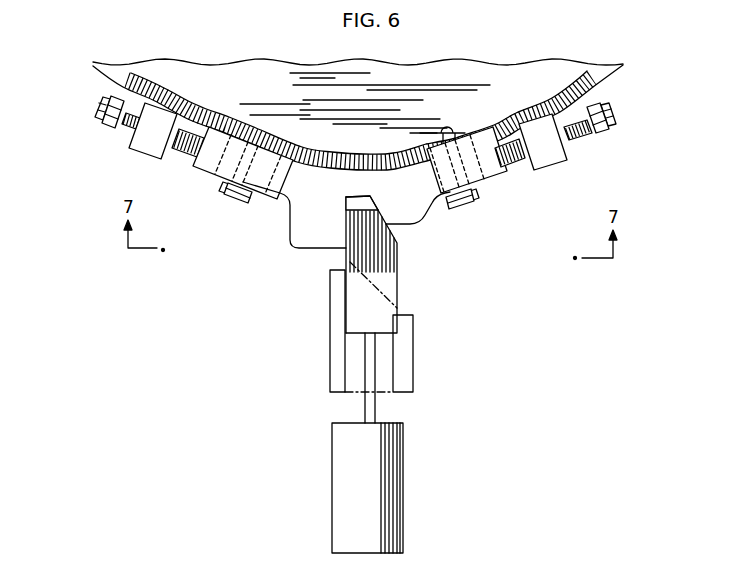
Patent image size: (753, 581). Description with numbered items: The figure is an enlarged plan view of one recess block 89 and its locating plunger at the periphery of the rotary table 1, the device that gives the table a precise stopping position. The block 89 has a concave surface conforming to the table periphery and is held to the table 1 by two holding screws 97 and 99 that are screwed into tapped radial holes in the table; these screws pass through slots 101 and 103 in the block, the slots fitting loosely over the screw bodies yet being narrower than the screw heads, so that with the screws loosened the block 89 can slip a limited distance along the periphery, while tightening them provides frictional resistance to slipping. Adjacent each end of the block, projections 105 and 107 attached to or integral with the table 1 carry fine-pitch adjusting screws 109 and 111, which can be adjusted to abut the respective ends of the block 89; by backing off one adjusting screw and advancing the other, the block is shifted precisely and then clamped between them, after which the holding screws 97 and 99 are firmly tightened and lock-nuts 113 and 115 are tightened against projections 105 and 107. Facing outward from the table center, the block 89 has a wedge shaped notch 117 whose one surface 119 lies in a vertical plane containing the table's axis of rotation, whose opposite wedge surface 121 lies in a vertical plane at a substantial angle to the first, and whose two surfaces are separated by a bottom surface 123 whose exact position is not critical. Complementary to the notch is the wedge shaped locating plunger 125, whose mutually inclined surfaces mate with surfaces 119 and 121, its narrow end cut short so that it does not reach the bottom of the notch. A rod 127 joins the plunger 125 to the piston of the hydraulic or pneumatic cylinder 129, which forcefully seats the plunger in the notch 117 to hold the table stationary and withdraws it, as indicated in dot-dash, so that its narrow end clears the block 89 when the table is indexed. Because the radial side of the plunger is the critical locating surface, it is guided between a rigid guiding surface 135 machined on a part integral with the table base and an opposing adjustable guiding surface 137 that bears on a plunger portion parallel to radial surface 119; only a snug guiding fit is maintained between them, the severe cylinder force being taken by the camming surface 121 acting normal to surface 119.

The table 1 is at (623, 65).
The lock-nut 113 is at (124, 133).
The projection 105 is at (152, 140).
The adjusting screw 109 is at (185, 150).
The slot 101 is at (227, 130).
The screw 97 is at (232, 198).
The recess block 89 is at (287, 214).
The slot 103 is at (463, 132).
The surface 119 is at (345, 222).
The bottom surface 123 is at (362, 198).
The wedge shaped notch 117 is at (352, 197).
The locating plunger 125 is at (398, 265).
The wedge surface 121 is at (409, 224).
The rigid guiding surface 135 is at (347, 352).
The adjustable guiding surface 137 is at (395, 368).
The rod 127 is at (373, 407).
The cylinder 129 is at (352, 455).
The screw 99 is at (462, 205).
The adjusting screw 111 is at (508, 158).
The projection 107 is at (543, 158).
The lock-nut 115 is at (567, 143).